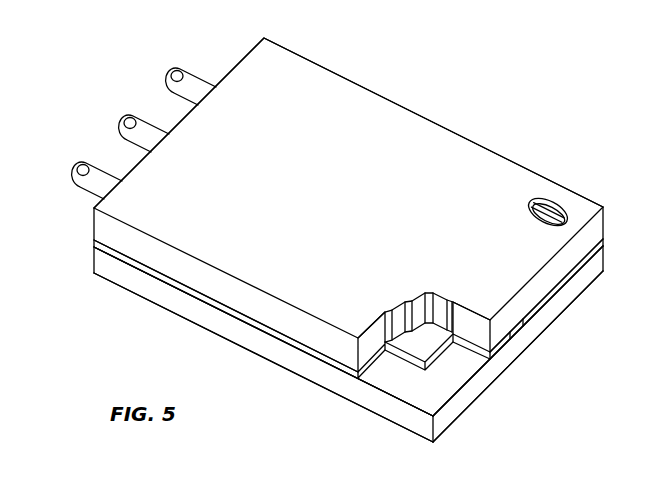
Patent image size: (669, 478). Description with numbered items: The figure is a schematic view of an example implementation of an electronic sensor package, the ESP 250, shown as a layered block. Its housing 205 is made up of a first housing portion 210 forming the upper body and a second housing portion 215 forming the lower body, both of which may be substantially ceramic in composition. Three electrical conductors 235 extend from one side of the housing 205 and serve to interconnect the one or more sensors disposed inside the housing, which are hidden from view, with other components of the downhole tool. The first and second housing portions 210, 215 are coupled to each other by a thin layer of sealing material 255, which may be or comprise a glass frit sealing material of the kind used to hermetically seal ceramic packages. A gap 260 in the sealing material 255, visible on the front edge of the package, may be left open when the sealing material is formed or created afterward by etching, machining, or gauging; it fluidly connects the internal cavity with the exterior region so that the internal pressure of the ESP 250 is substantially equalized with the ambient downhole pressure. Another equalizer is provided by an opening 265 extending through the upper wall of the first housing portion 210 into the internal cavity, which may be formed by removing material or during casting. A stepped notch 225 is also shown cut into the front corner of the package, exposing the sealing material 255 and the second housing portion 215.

The ESP 250 is at (424, 44).
The housing 205 is at (480, 136).
The first housing portion 210 is at (254, 101).
The electrical conductors 235 is at (198, 88).
The opening 265 is at (537, 197).
The sealing material 255 is at (102, 244).
The second housing portion 215 is at (103, 265).
The castellated notch 225 is at (428, 345).
The gap 260 is at (523, 322).